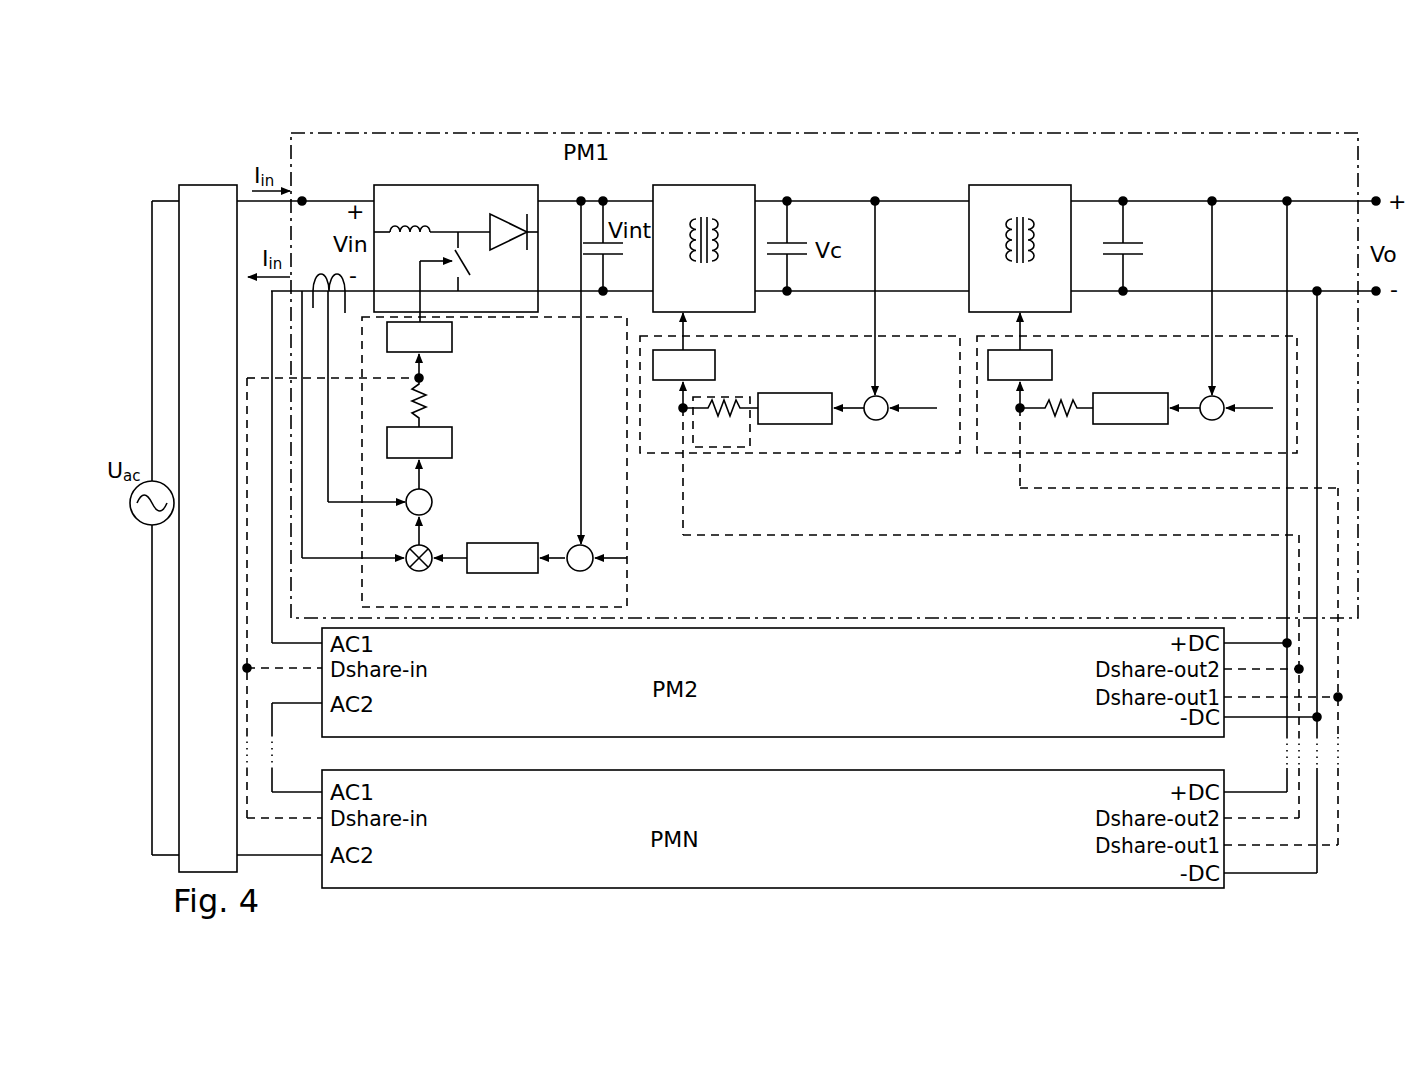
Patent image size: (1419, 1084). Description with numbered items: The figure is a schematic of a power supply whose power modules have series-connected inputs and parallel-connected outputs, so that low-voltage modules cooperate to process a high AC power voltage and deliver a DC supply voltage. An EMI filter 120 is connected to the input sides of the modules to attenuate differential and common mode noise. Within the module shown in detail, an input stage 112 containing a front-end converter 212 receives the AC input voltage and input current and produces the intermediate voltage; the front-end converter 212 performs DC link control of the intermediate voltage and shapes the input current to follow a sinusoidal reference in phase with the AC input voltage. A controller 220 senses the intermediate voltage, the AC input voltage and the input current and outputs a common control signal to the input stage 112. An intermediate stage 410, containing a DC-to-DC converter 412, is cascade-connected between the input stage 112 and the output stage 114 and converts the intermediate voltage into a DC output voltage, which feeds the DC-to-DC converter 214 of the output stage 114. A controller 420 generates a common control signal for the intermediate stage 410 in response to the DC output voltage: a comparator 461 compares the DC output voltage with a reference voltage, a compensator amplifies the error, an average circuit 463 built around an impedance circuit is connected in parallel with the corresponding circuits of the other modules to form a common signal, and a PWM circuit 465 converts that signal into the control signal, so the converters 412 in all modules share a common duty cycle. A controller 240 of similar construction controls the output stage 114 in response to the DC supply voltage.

The input stage 112 is at (454, 206).
The intermediate stage 410 is at (697, 201).
The output stage 114 is at (1014, 201).
The front-end converter 212 is at (460, 220).
The DC-to-DC converter 412 is at (724, 215).
The DC-to-DC converter 214 is at (1040, 215).
The EMI filter 120 is at (228, 605).
The controller 220 is at (547, 448).
The controller 420 is at (800, 380).
The controller 240 is at (1156, 370).
The PWM circuit 465 is at (715, 362).
The average circuit 463 is at (718, 397).
The comparator 461 is at (866, 400).